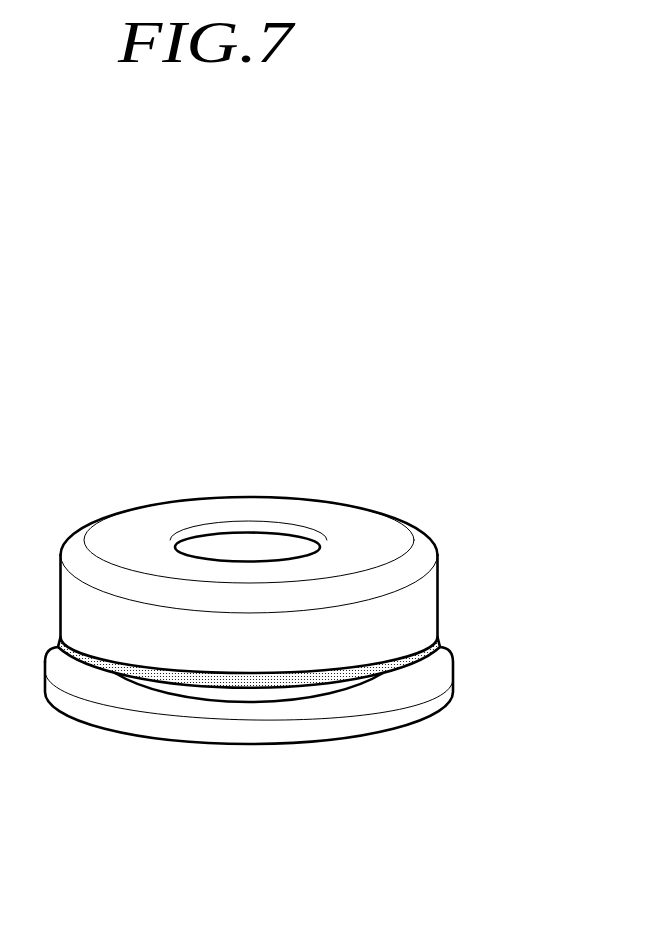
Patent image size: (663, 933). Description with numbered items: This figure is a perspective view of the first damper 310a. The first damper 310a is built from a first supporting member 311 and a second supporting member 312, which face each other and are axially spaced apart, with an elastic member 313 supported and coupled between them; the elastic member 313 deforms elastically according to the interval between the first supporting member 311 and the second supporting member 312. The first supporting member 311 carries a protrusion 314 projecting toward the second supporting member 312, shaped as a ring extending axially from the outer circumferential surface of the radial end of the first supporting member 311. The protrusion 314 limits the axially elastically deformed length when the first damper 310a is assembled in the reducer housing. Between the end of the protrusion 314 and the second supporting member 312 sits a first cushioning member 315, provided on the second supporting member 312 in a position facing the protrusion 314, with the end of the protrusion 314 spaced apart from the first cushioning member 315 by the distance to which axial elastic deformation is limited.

The first damper 310a is at (96, 438).
The first supporting member 311 is at (342, 522).
The second supporting member 312 is at (423, 677).
The elastic member 313 is at (247, 696).
The protrusion 314 is at (425, 608).
The first cushioning member 315 is at (428, 658).